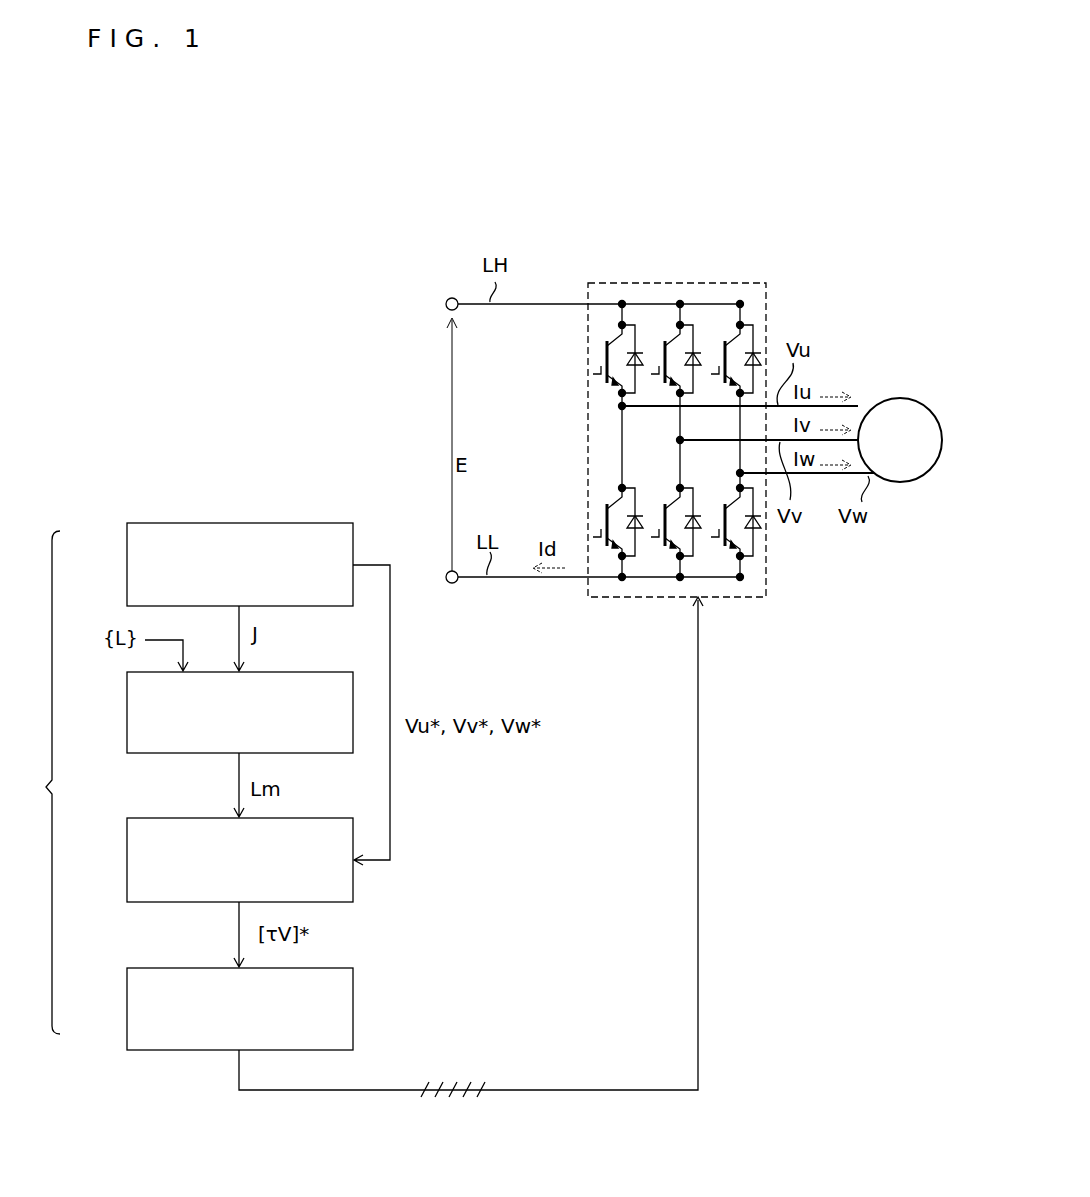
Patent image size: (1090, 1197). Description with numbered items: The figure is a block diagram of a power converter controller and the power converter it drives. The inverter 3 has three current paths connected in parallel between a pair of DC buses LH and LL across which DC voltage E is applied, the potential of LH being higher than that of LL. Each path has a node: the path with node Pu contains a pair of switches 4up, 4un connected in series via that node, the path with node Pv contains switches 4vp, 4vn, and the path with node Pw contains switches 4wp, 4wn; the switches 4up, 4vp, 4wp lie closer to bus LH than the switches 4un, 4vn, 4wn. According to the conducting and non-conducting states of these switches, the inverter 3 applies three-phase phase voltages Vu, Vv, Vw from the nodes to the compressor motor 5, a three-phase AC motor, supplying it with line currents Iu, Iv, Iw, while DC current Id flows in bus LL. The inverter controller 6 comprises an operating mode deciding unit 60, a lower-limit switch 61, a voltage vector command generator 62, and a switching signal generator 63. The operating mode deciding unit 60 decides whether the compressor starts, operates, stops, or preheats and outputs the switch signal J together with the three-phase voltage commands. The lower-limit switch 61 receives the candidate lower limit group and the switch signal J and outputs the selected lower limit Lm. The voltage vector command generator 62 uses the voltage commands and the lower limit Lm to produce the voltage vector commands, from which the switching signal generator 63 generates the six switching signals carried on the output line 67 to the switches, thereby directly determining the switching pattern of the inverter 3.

The inverter controller 6 is at (40, 782).
The operating mode deciding unit 60 is at (127, 567).
The lower-limit switch 61 is at (127, 717).
The voltage vector command generator 62 is at (127, 860).
The switching signal generator 63 is at (127, 1008).
The switching signal line 67 is at (353, 1001).
The inverter 3 is at (702, 443).
The compressor motor 5 is at (900, 398).
The switch 4up is at (613, 330).
The switch 4vp is at (671, 330).
The switch 4wp is at (731, 330).
The switch 4un is at (612, 548).
The switch 4vn is at (670, 548).
The switch 4wn is at (730, 548).